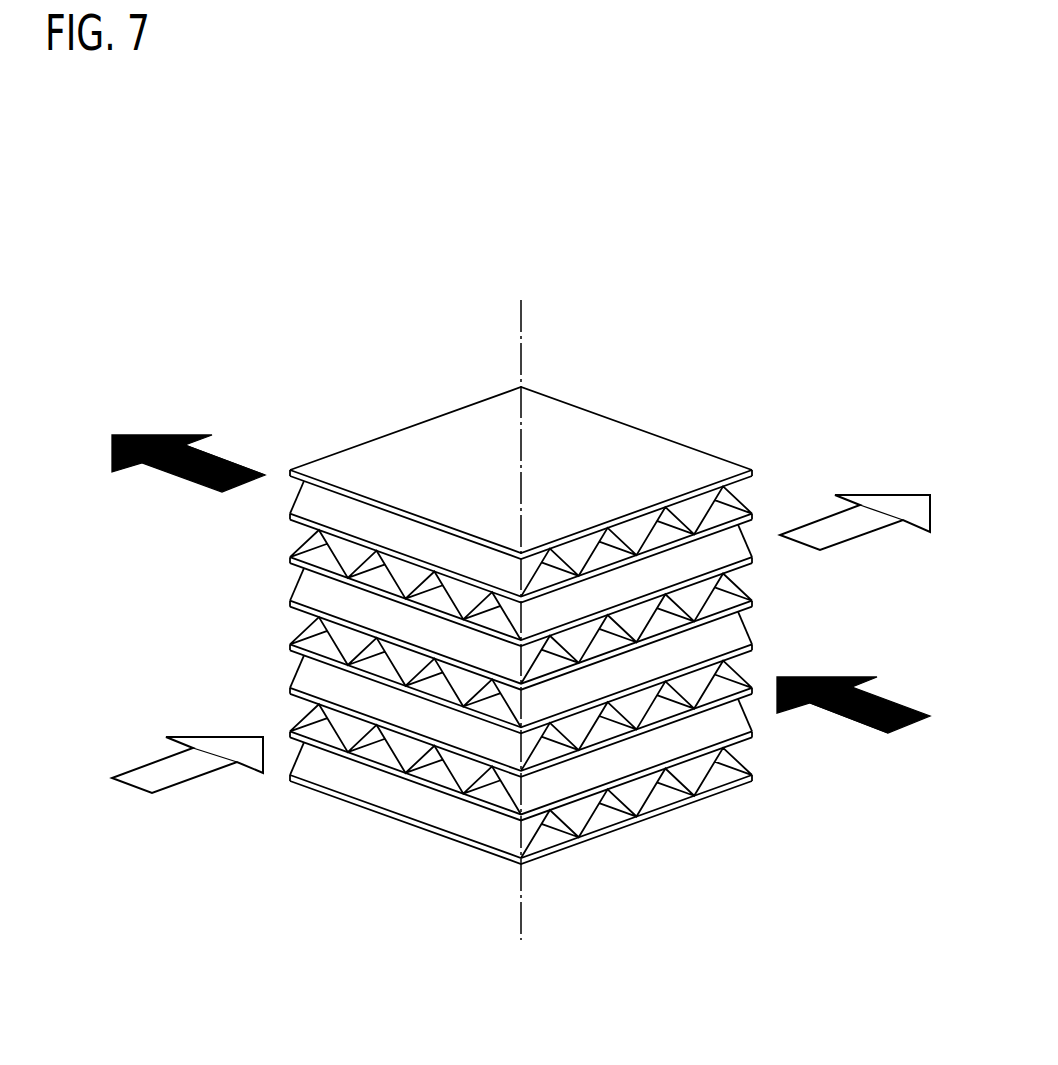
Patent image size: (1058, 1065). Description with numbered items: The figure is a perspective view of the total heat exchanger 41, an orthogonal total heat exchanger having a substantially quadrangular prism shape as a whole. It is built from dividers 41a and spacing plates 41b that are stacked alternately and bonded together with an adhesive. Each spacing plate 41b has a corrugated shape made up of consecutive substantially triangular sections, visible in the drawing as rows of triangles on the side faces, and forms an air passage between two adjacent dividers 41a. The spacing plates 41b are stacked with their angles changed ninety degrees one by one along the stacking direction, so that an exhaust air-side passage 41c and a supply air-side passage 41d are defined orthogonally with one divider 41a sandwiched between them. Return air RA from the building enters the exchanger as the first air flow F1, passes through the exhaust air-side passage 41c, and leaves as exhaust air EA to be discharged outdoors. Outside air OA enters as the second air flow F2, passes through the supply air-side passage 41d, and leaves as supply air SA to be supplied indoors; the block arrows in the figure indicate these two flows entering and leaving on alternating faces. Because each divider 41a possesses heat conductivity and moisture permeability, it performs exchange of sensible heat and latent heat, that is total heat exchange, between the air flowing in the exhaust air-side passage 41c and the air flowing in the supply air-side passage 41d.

The total heat exchanger 41 is at (604, 350).
The divider 41a is at (367, 457).
The spacing plate 41b is at (295, 720).
The exhaust air-side passage 41c is at (659, 708).
The supply air-side passage 41d is at (445, 774).
The exhaust air EA is at (172, 449).
The supply air SA is at (870, 509).
The return air RA is at (862, 717).
The outside air OA is at (177, 778).
The first air flow F1 is at (244, 466).
The second air flow F2 is at (810, 540).